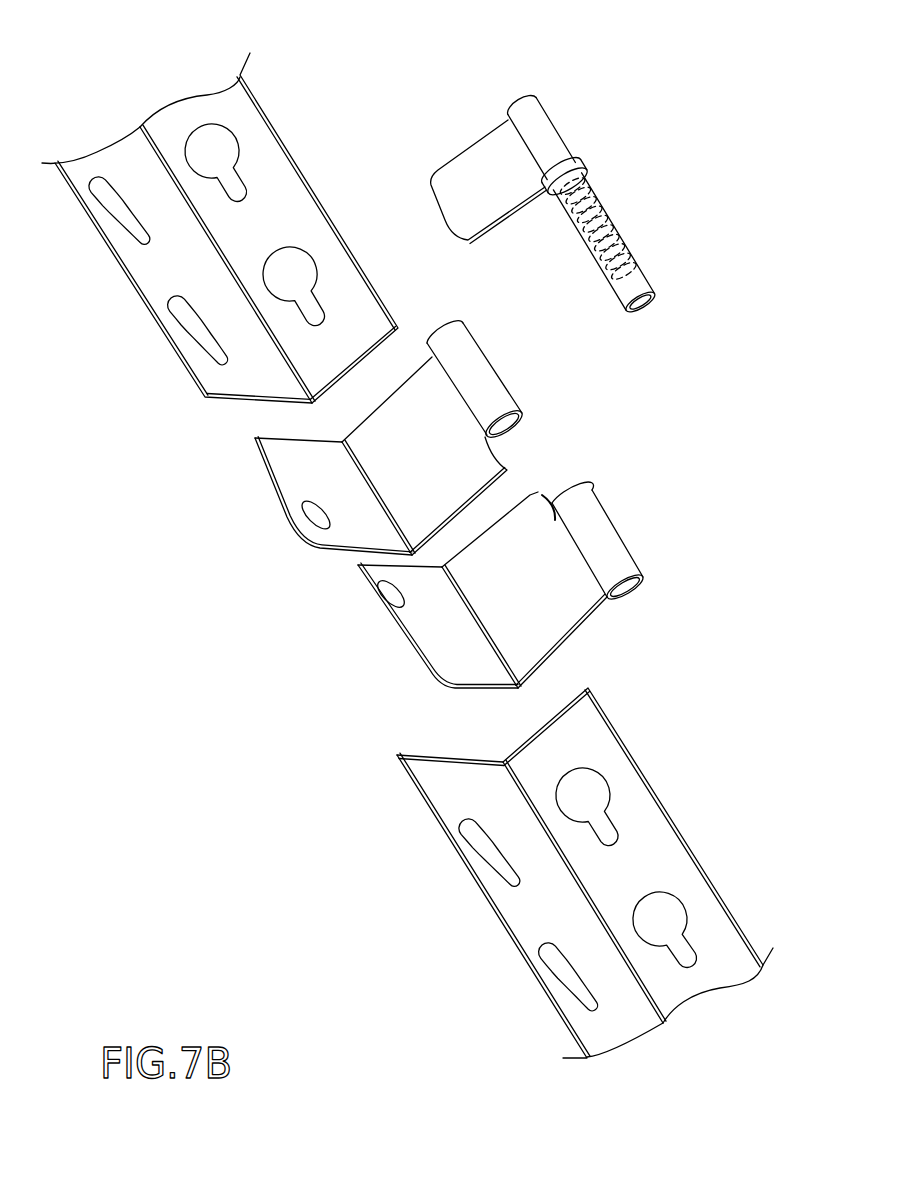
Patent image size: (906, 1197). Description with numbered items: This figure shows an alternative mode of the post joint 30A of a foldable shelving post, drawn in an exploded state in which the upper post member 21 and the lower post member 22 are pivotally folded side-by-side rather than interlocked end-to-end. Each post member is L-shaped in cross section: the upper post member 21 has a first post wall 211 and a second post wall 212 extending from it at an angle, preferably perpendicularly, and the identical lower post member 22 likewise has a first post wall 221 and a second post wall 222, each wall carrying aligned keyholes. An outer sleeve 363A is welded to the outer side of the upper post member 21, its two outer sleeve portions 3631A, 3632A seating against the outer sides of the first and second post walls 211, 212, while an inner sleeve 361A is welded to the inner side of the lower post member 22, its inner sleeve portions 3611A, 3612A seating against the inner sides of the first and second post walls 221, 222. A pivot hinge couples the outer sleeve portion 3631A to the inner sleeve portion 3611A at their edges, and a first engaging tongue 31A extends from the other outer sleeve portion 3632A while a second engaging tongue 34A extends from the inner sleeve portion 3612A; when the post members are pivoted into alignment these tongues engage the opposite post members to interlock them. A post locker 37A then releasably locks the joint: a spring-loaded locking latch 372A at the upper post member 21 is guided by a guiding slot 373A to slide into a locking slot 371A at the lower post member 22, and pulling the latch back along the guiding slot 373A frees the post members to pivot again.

The upper post member 21 is at (408, 80).
The first post wall 211 is at (155, 273).
The second post wall 212 is at (280, 203).
The lower post member 22 is at (752, 772).
The first post wall 221 is at (522, 927).
The second post wall 222 is at (665, 872).
The post joint 30A is at (104, 763).
The first engaging tongue 31A is at (492, 463).
The second engaging tongue 34A is at (543, 497).
The inner sleeve 361A is at (228, 728).
The inner sleeve portion 3611A is at (527, 617).
The inner sleeve portion 3612A is at (437, 637).
The outer sleeve 363A is at (130, 572).
The outer sleeve portion 3631A is at (293, 466).
The outer sleeve portion 3632A is at (425, 473).
The post locker 37A is at (748, 190).
The locking slot 371A is at (639, 597).
The locking latch 372A is at (637, 282).
The guiding slot 373A is at (442, 320).